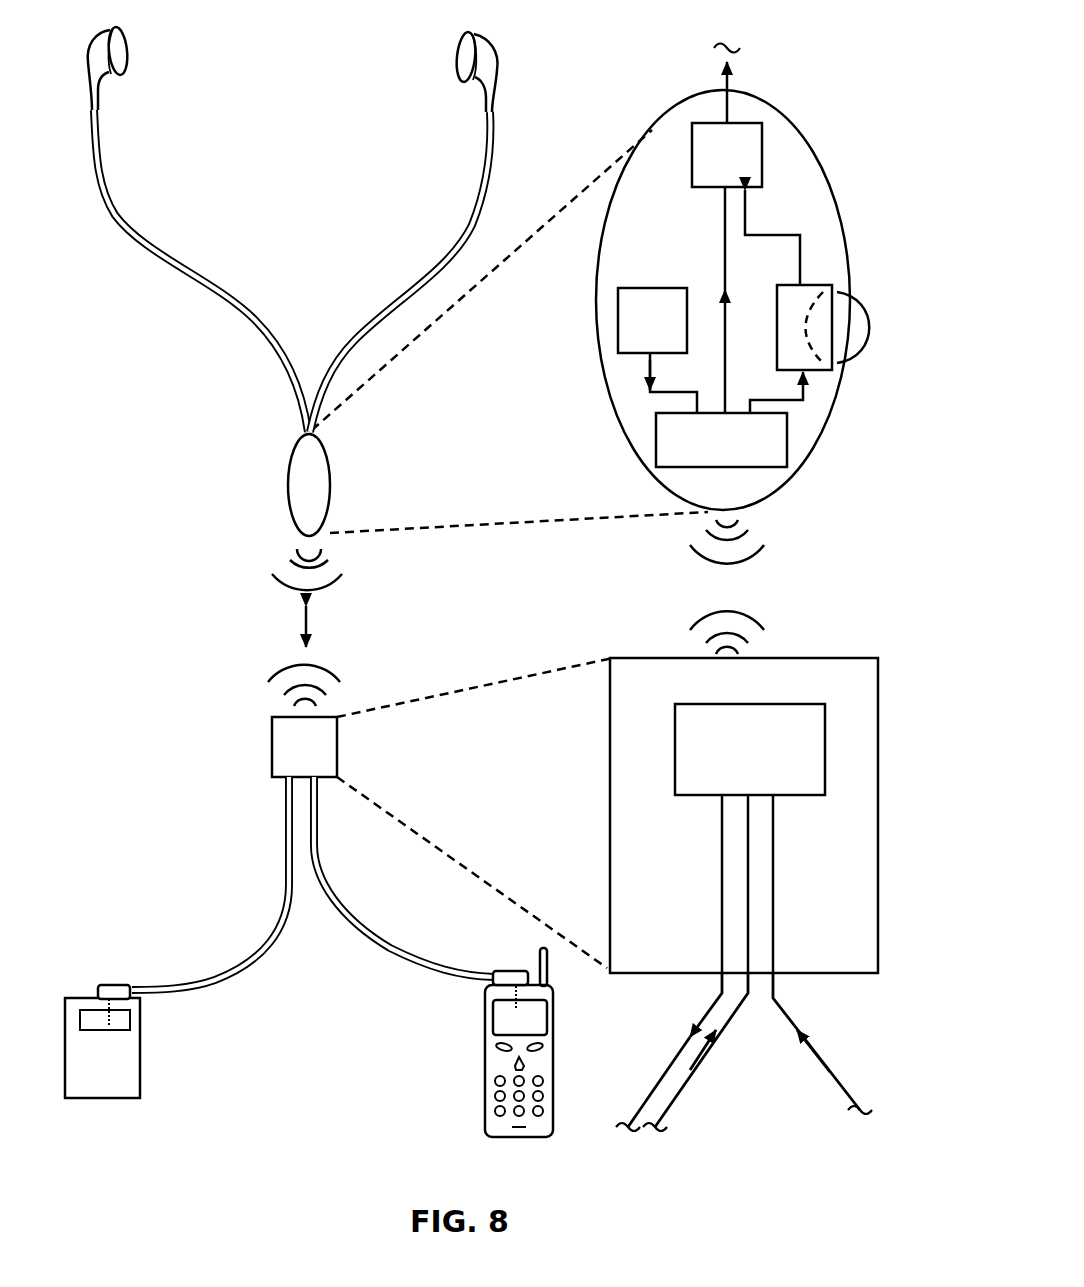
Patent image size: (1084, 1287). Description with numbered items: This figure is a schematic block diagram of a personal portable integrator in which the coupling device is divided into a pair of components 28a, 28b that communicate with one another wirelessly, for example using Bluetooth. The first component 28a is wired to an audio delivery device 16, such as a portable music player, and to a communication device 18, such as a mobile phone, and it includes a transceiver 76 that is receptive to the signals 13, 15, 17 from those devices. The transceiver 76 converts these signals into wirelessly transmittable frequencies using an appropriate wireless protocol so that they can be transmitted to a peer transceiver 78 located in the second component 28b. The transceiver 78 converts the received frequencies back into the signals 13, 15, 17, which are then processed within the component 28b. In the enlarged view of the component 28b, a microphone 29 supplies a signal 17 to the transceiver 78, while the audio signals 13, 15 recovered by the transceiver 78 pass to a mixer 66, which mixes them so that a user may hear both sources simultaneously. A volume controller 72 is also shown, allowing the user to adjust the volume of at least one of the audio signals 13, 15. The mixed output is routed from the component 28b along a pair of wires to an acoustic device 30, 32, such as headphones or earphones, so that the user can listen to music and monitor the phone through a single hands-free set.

The acoustic device 30 is at (121, 48).
The acoustic device 32 is at (464, 56).
The second component of coupling device 28b is at (290, 480).
The first component of coupling device 28a is at (276, 747).
The audio delivery device 16 is at (137, 1076).
The communication device 18 is at (486, 1115).
The mixer 66 is at (727, 116).
The microphone 29 is at (652, 320).
The peer transceiver 78 is at (721, 440).
The volume controller 72 is at (813, 287).
The signal 17 is at (647, 369).
The audio signal 15 is at (717, 398).
The audio signal 13 is at (767, 402).
The transceiver 76 is at (750, 838).